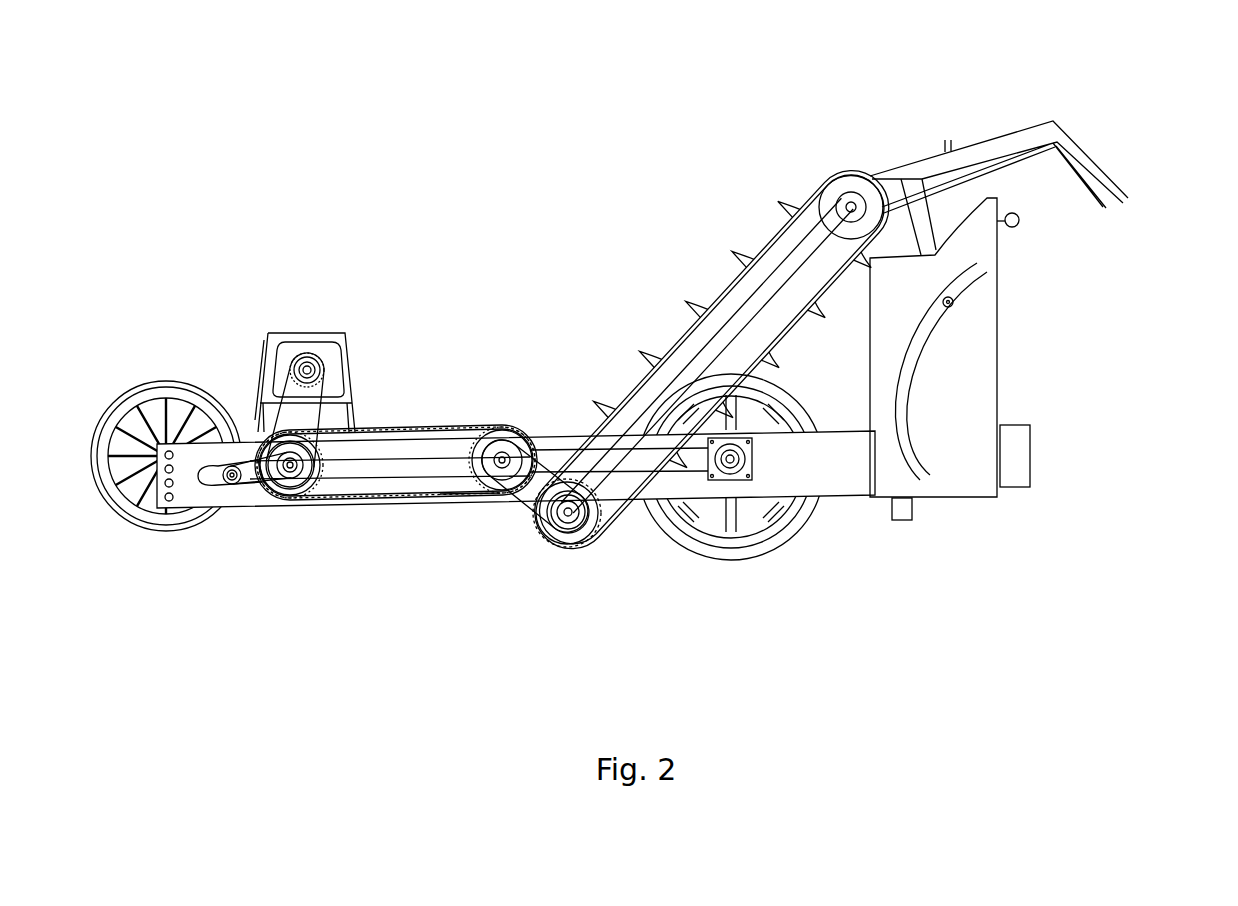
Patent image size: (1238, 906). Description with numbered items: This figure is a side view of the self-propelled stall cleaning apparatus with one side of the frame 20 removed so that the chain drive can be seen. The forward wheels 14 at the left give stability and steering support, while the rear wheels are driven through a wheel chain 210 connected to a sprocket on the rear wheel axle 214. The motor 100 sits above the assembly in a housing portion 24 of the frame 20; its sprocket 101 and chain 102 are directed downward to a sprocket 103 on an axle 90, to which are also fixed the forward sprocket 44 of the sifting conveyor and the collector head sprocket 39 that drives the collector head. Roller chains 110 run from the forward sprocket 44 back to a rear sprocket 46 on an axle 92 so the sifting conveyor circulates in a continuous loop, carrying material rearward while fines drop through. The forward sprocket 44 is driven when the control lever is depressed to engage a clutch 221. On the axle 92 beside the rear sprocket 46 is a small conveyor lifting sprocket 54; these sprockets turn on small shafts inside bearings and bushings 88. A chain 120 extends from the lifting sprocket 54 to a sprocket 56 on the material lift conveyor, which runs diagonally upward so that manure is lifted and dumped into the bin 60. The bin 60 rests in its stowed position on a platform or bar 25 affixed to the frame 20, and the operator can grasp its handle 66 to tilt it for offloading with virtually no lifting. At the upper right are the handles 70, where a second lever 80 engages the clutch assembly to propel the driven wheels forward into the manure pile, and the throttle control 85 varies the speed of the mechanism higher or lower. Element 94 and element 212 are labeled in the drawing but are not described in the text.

The forward wheels 14 is at (153, 379).
The frame assembly 20 is at (196, 454).
The housing portion 24 is at (348, 380).
The platform or bar 25 is at (903, 521).
The collector head sprocket 39 is at (279, 485).
The forward sprocket 44 is at (290, 483).
The rear sprocket 46 is at (472, 468).
The conveyor lifting sprocket 54 is at (572, 521).
The sprocket on the material lift conveyor 56 is at (503, 480).
The bin 60 is at (1003, 370).
The handle 66 is at (1018, 226).
The handles 70 is at (997, 138).
The second lever 80 is at (1087, 178).
The throttle control 85 is at (948, 153).
The bearings and bushings 88 is at (215, 478).
The axle 90 is at (200, 482).
The axle 92 is at (504, 445).
The gear 94 is at (542, 548).
The motor 100 is at (288, 332).
The sprocket 101 is at (312, 362).
The chain 102 is at (270, 387).
The sprocket 103 is at (298, 494).
The roller chains 110 is at (418, 428).
The chain 120 is at (527, 500).
The wheel chain 210 is at (728, 476).
The bearing plate 212 is at (746, 458).
The rear wheel axle 214 is at (745, 470).
The clutch 221 is at (322, 362).